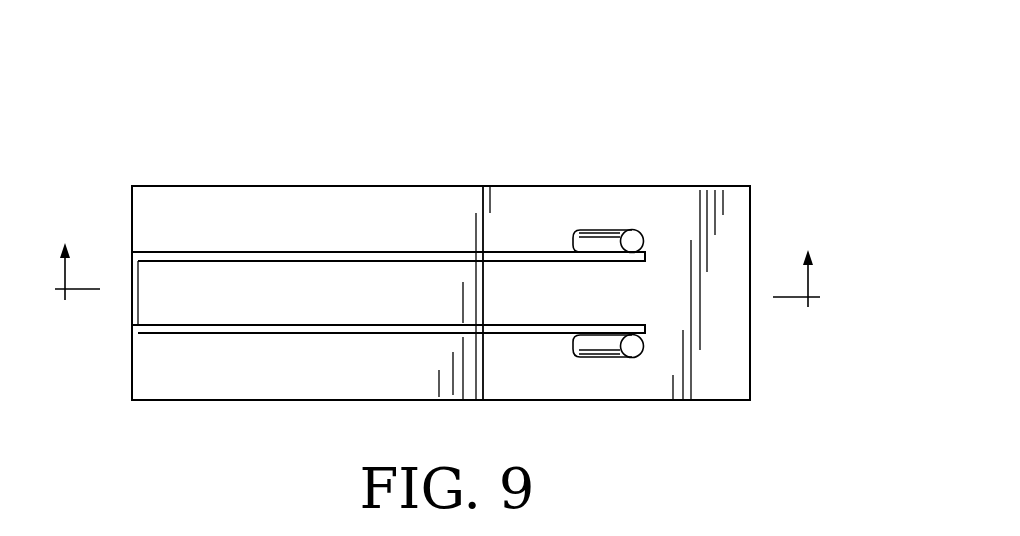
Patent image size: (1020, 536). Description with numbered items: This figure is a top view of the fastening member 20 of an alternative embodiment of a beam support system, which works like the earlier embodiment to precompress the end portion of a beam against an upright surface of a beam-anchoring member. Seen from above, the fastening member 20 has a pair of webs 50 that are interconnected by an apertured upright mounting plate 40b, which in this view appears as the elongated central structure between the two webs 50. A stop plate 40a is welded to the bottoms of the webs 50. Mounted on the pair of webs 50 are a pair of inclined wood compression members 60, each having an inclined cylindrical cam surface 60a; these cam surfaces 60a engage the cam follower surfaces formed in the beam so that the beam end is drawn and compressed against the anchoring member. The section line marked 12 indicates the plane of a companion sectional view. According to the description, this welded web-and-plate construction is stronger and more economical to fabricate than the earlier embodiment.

The section line 12- 12 is at (437, 278).
The fastening member 20 is at (381, 160).
The stop plate 40a is at (453, 223).
The upright mounting plate 40b is at (140, 290).
The webs 50 is at (299, 252).
The inclined wood compression members 60 is at (638, 230).
The inclined cylindrical cam surfaces 60a is at (576, 241).